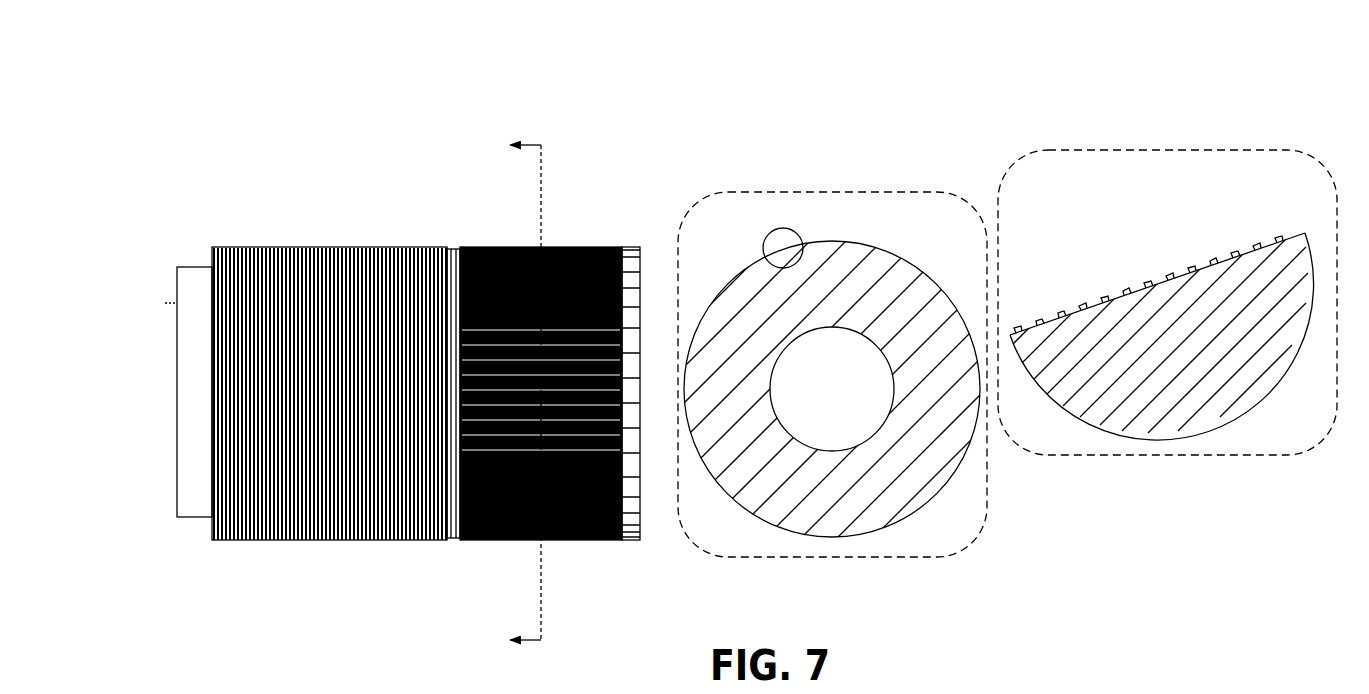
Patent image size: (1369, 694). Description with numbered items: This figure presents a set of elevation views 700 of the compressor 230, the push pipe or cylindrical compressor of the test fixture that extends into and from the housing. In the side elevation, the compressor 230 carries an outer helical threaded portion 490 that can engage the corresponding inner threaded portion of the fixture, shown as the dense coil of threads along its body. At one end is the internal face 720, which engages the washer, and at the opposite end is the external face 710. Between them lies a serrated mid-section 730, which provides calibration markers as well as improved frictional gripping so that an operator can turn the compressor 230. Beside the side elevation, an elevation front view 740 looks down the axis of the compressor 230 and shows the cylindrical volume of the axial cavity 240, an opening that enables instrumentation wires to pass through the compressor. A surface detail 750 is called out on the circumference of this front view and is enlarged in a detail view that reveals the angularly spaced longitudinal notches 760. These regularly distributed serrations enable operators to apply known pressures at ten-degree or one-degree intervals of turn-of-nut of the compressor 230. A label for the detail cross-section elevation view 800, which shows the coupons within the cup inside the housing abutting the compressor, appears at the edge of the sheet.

The set of elevation views 700 is at (317, 92).
The compressor 230 is at (658, 132).
The outer helical threaded portion 490 is at (367, 245).
The internal face 720 is at (174, 486).
The serrated mid-section 730 is at (487, 547).
The external face 710 is at (640, 504).
The elevation front view 740 is at (832, 374).
The axial cavity 240 is at (832, 389).
The surface detail 750 is at (798, 240).
The longitudinal notches 760 is at (1212, 252).
The detail cross-section elevation view 800 is at (1214, 693).